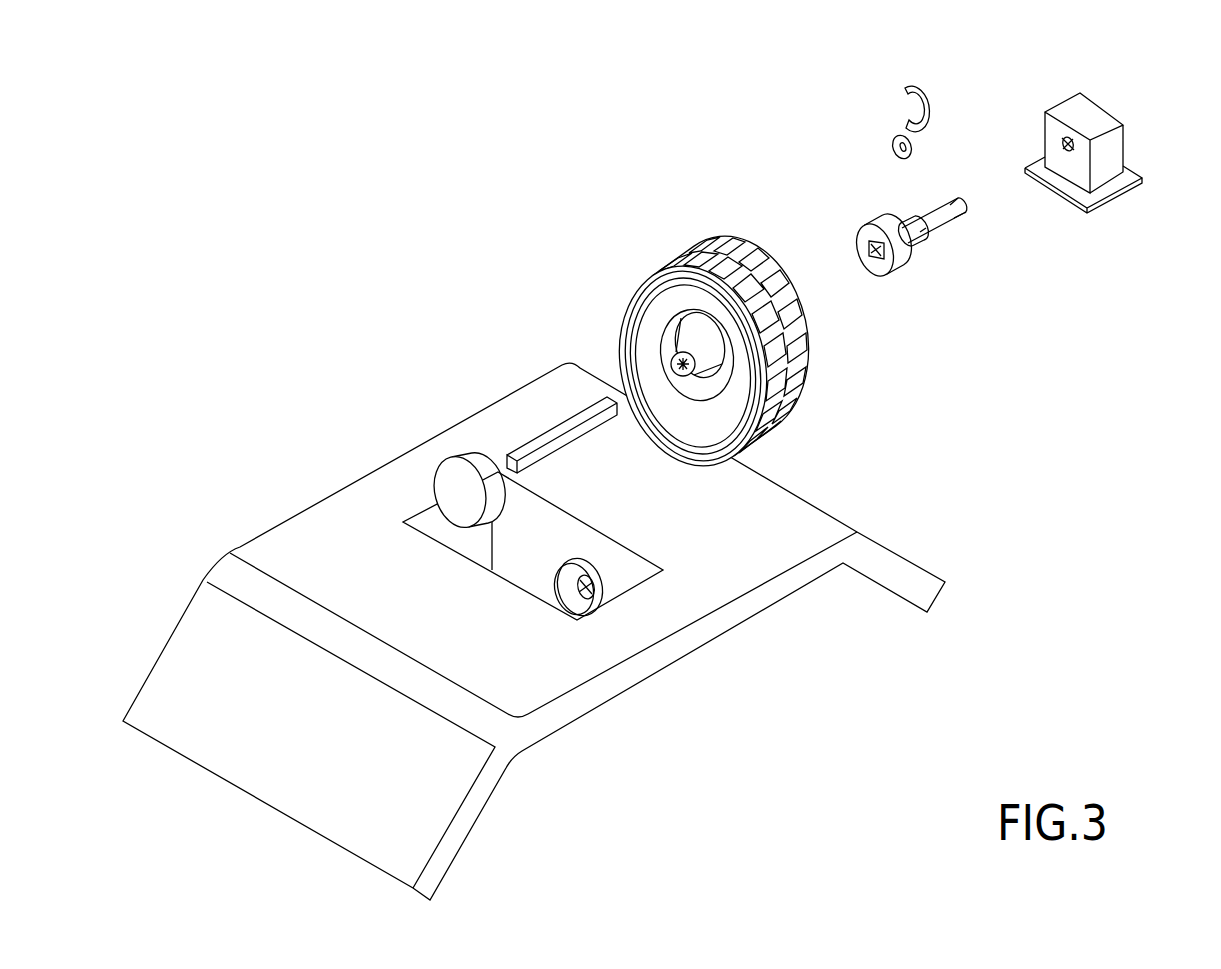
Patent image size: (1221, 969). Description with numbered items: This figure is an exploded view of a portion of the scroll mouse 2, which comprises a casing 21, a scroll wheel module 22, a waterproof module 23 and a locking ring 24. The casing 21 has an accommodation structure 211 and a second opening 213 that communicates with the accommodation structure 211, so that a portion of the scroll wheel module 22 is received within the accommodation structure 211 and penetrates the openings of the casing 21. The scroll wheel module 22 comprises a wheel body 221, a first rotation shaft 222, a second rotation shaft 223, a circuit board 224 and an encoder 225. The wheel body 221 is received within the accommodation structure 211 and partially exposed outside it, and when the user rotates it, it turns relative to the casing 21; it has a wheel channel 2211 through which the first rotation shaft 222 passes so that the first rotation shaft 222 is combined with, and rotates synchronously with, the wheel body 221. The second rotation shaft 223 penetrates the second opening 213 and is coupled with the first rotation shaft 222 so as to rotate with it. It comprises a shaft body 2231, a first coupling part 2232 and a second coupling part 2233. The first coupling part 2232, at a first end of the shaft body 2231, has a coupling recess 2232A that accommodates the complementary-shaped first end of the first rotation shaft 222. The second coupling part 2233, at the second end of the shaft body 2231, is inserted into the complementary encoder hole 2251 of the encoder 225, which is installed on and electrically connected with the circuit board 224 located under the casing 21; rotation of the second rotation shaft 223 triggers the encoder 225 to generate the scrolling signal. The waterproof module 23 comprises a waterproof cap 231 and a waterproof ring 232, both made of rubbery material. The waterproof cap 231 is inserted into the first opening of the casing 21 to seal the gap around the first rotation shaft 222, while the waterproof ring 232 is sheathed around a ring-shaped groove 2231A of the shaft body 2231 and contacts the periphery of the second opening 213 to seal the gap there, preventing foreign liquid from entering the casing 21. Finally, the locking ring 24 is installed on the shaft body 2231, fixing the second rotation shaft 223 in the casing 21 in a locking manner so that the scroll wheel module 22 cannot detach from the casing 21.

The scroll mouse 2 is at (272, 177).
The casing 21 is at (779, 504).
The accommodation structure 211 is at (559, 520).
The second opening 213 is at (585, 580).
The scroll wheel module 22 is at (698, 330).
The wheel body 221 is at (677, 330).
The wheel channel 2211 is at (677, 368).
The first rotation shaft 222 is at (553, 432).
The second rotation shaft 223 is at (891, 240).
The shaft body 2231 is at (959, 237).
The ring-shaped groove 2231A is at (925, 235).
The first coupling part 2232 is at (837, 262).
The coupling recess 2232A is at (880, 250).
The second coupling part 2233 is at (967, 213).
The circuit board 224 is at (1130, 178).
The encoder 225 is at (1086, 131).
The encoder hole 2251 is at (1060, 142).
The waterproof module 23 is at (750, 330).
The waterproof cap 231 is at (462, 460).
The waterproof ring 232 is at (897, 140).
The locking ring 24 is at (910, 83).